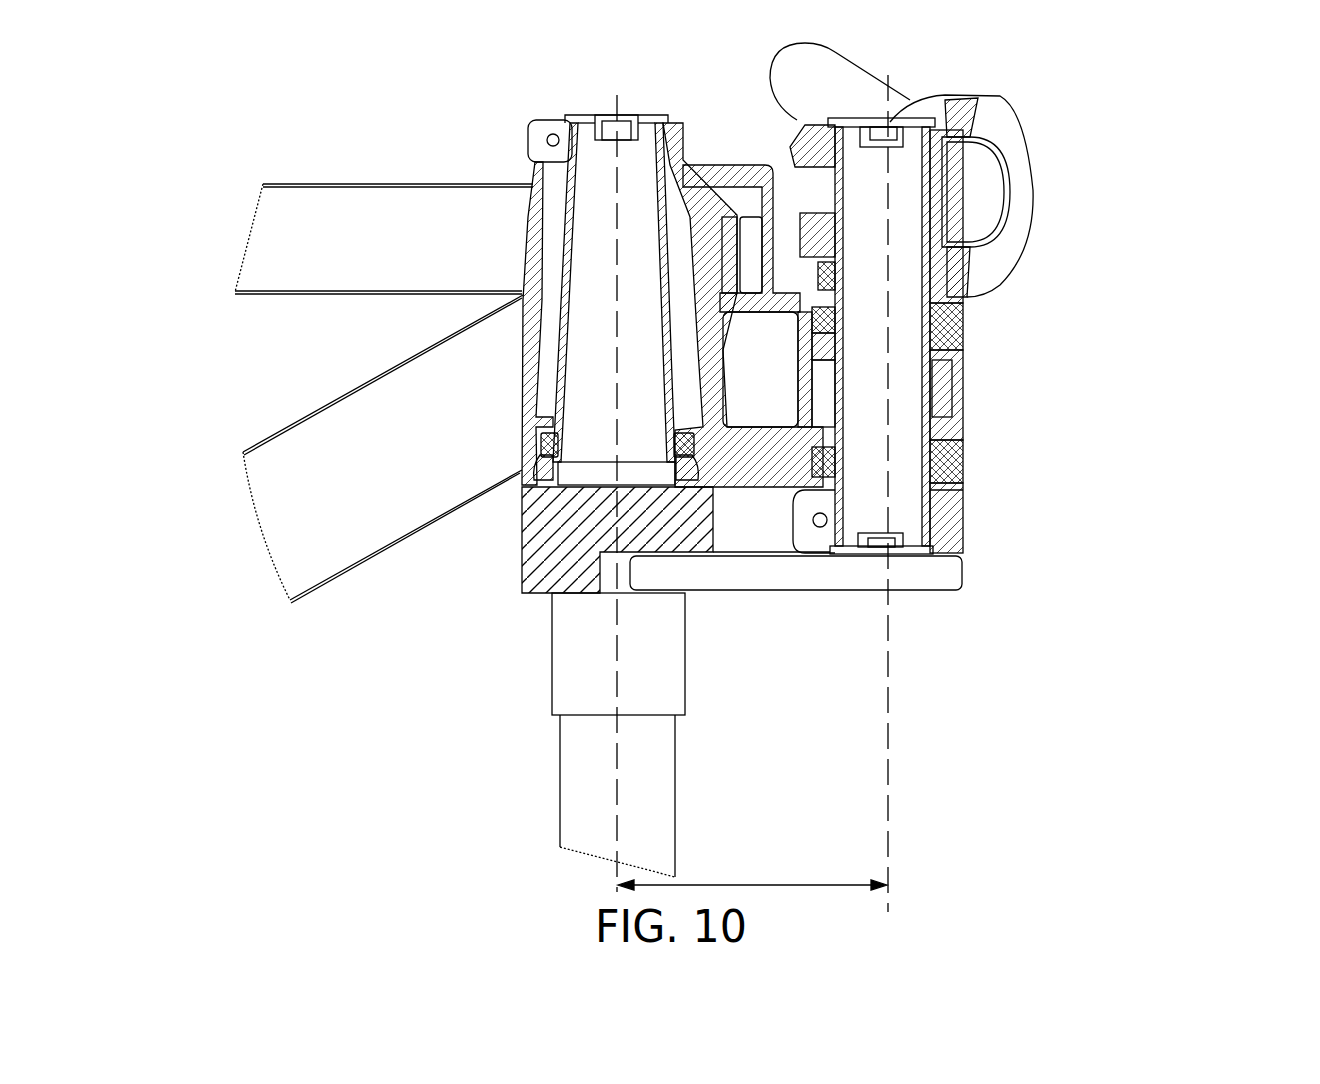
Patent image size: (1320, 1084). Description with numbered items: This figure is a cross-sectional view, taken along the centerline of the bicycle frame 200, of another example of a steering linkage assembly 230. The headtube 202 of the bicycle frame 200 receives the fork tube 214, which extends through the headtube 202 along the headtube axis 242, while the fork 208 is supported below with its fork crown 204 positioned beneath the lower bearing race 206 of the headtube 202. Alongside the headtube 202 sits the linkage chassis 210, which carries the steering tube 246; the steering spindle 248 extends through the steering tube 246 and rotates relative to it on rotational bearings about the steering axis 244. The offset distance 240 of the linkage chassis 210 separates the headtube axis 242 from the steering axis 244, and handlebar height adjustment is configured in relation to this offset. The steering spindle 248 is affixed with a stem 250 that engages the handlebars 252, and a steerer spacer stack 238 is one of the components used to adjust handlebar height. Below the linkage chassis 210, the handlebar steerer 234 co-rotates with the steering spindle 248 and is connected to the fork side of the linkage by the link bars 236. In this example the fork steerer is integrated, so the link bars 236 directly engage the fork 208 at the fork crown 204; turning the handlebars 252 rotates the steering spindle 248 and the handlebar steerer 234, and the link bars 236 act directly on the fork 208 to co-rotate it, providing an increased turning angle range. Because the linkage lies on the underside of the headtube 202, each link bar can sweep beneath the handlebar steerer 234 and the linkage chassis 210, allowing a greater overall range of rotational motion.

The bicycle frame 200 is at (363, 289).
The headtube 202 is at (547, 203).
The fork crown 204 is at (650, 612).
The lower bearing race 206 is at (543, 467).
The fork 208 is at (562, 652).
The linkage chassis 210 is at (798, 312).
The fork tube 214 is at (558, 358).
The steering linkage assembly 230 is at (1005, 599).
The handlebar steerer 234 is at (940, 534).
The link bars 236 is at (923, 575).
The steerer spacer stack 238 is at (938, 282).
The offset distance 240 is at (792, 885).
The headtube axis 242 is at (617, 807).
The steering axis 244 is at (893, 852).
The steering tube 246 is at (930, 508).
The steering spindle 248 is at (905, 419).
The stem 250 is at (1013, 160).
The handlebars 252 is at (797, 80).